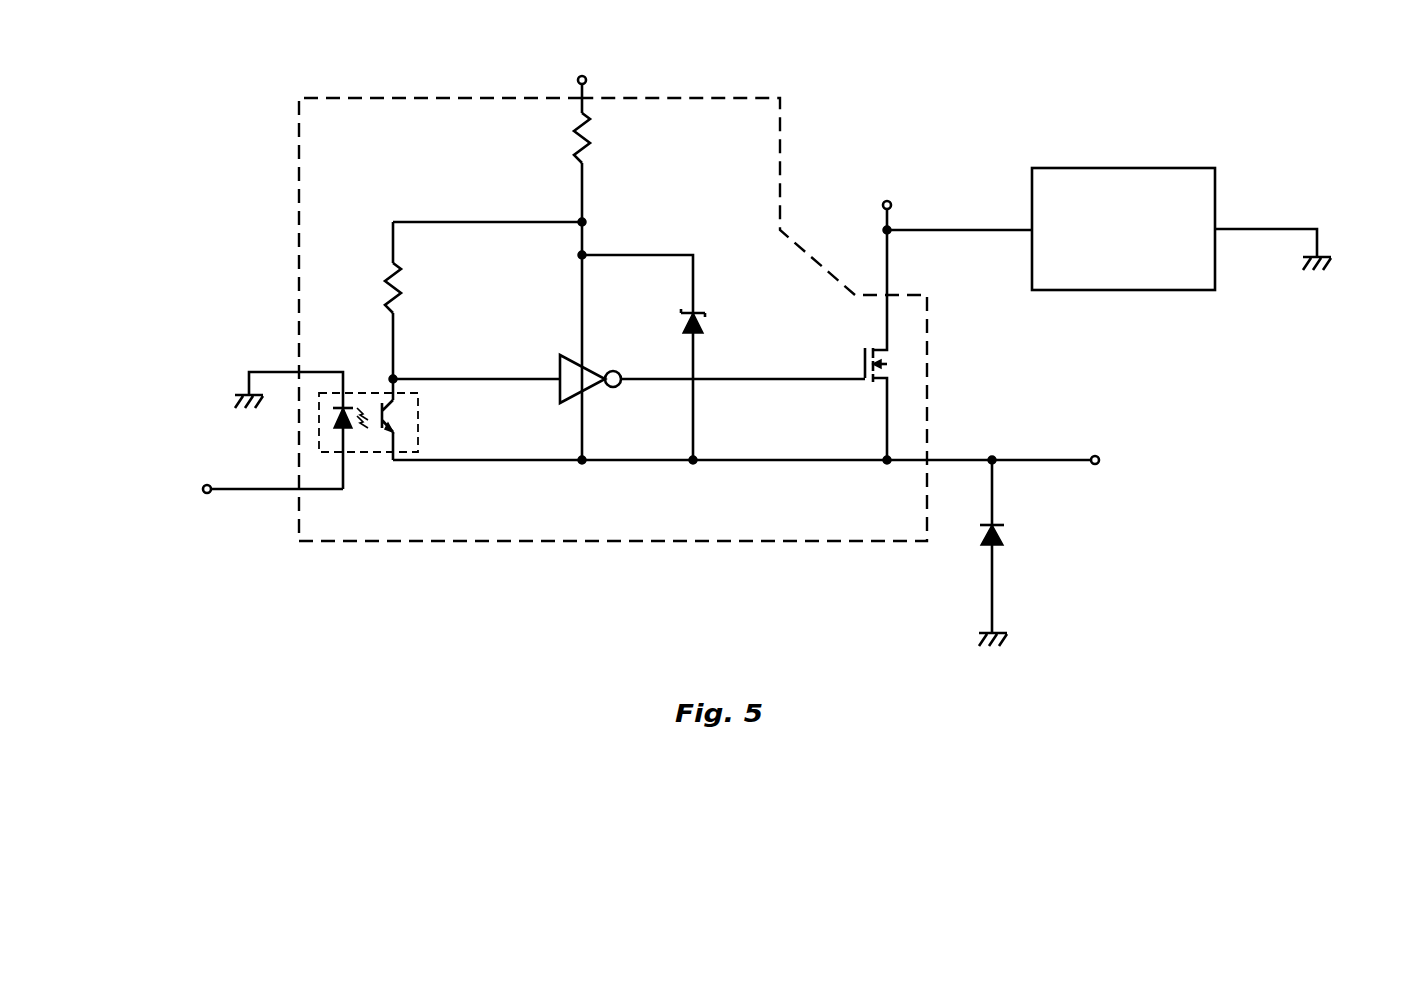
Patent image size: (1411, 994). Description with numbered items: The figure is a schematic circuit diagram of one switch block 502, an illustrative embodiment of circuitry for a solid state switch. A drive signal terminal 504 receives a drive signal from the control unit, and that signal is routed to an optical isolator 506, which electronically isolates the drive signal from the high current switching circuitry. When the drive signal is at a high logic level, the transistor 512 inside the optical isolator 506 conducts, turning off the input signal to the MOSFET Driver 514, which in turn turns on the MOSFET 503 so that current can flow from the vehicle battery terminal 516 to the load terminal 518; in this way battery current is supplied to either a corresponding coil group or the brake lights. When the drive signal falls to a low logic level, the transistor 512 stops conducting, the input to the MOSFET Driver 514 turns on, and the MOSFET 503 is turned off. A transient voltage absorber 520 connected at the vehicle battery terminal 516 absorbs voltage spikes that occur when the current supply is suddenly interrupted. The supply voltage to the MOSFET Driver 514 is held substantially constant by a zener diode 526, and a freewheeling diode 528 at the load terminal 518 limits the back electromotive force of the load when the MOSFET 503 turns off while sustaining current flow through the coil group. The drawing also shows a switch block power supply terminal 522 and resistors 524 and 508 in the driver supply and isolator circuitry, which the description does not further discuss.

The switch block 502 is at (438, 569).
The MOSFET 503 is at (884, 355).
The drive signal terminal 504 is at (205, 495).
The optical isolator 506 is at (362, 443).
The pull-up resistor 508 is at (400, 293).
The transistor 512 is at (378, 430).
The MOSFET Driver 514 is at (598, 383).
The vehicle battery terminal 516 is at (883, 206).
The load terminal 518 is at (1099, 456).
The transient voltage absorber 520 is at (1157, 188).
The switch block power supply terminal 522 is at (578, 80).
The resistor 524 is at (595, 128).
The zener diode 526 is at (697, 316).
The freewheeling diode 528 is at (994, 524).